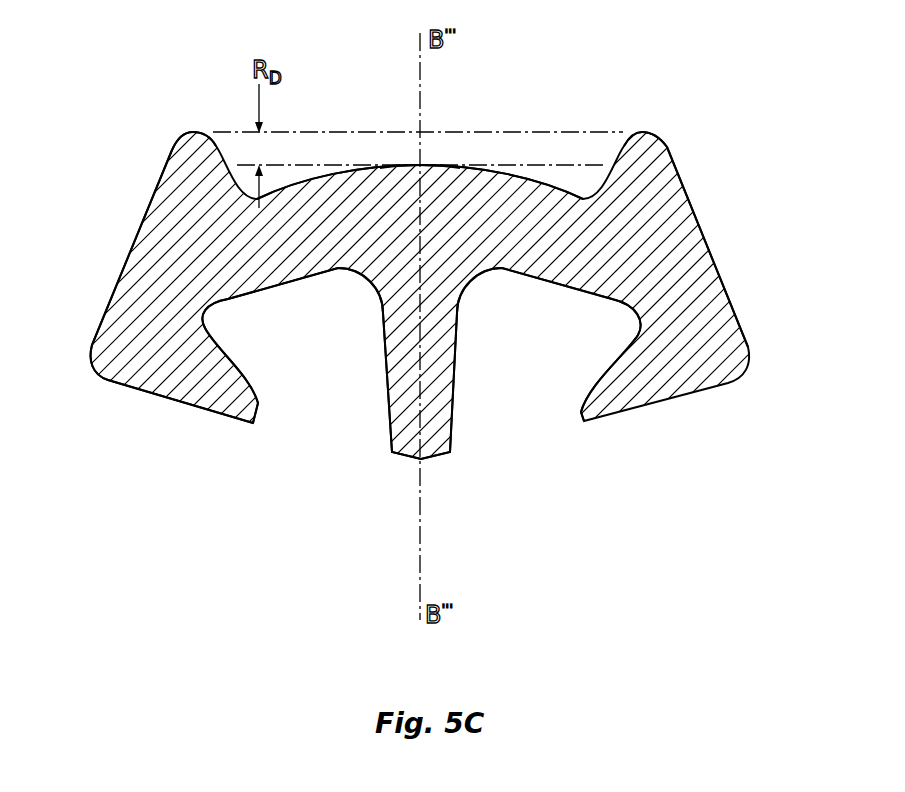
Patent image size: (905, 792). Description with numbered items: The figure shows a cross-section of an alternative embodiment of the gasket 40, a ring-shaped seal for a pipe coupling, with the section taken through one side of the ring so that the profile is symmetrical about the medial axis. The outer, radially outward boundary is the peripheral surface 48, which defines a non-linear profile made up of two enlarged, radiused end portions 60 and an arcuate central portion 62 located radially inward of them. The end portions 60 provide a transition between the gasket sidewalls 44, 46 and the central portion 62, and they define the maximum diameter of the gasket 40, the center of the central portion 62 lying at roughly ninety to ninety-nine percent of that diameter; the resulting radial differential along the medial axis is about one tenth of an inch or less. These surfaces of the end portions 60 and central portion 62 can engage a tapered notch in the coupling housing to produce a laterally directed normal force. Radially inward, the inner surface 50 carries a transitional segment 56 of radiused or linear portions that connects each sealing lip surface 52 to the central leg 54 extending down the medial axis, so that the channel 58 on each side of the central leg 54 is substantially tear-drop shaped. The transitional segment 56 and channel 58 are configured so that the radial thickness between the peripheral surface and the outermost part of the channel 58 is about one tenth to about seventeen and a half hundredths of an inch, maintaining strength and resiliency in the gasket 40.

The gasket 40 is at (578, 112).
The gasket sidewall 44 is at (132, 240).
The gasket sidewall 46 is at (743, 247).
The peripheral surface 48 is at (341, 165).
The inner surface 50 is at (568, 290).
The sealing lip surface 52 is at (197, 407).
The central leg 54 is at (390, 410).
The transitional segment 56 is at (257, 295).
The channel 58 is at (411, 325).
The end portion 60 is at (192, 130).
The central portion 62 is at (448, 165).